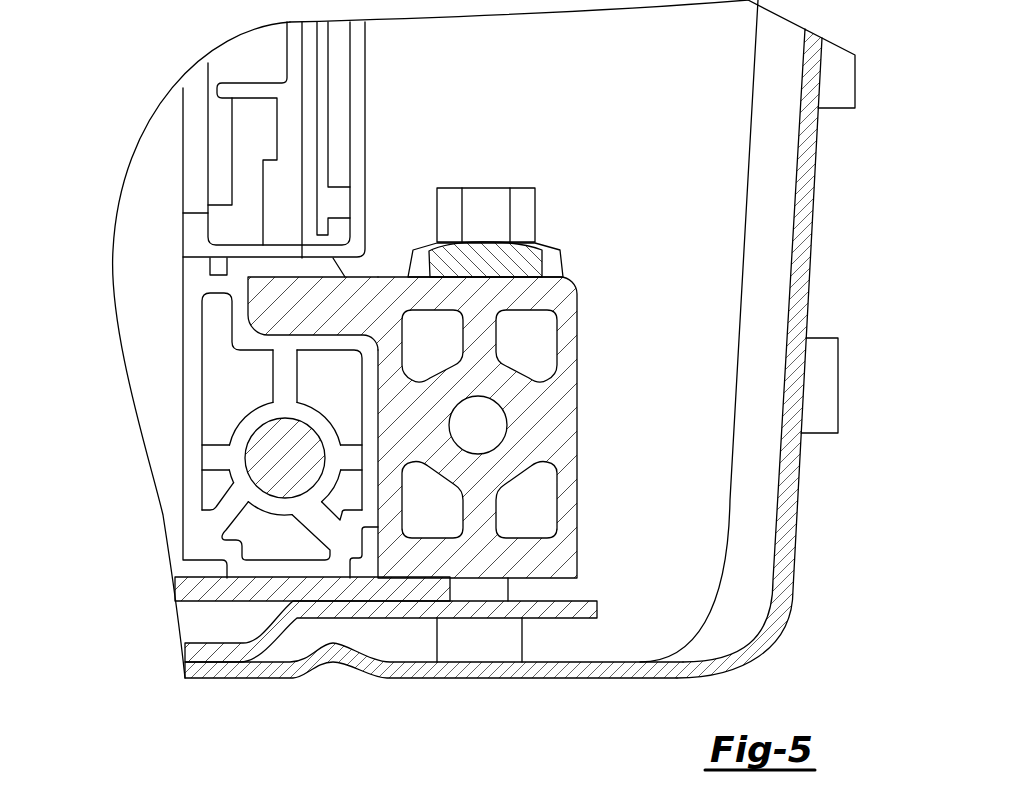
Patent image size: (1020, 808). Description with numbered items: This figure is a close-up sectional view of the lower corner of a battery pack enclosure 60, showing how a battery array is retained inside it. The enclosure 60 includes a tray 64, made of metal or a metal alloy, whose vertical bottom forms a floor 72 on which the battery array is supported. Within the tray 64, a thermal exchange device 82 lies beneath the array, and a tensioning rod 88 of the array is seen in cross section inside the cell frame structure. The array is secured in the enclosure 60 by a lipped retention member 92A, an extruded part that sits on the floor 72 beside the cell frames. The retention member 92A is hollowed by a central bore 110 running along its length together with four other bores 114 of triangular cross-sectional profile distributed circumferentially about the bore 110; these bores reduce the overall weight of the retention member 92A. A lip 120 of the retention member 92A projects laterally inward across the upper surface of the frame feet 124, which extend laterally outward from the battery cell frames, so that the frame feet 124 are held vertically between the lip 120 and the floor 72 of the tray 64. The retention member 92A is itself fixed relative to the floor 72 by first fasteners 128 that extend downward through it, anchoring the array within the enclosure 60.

The enclosure 60 is at (815, 227).
The tray 64 is at (797, 507).
The floor 72 is at (550, 661).
The thermal exchange device 82 is at (201, 621).
The tensioning rods 88 is at (275, 468).
The retention member 92A is at (388, 277).
The bore 110 is at (496, 430).
The other bores 114 is at (428, 528).
The lip 120 is at (288, 302).
The frame feet 124 is at (291, 567).
The first fasteners 128 is at (536, 214).